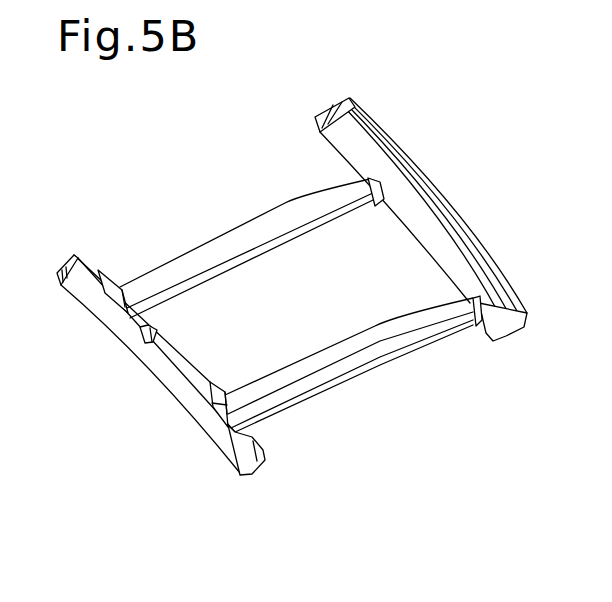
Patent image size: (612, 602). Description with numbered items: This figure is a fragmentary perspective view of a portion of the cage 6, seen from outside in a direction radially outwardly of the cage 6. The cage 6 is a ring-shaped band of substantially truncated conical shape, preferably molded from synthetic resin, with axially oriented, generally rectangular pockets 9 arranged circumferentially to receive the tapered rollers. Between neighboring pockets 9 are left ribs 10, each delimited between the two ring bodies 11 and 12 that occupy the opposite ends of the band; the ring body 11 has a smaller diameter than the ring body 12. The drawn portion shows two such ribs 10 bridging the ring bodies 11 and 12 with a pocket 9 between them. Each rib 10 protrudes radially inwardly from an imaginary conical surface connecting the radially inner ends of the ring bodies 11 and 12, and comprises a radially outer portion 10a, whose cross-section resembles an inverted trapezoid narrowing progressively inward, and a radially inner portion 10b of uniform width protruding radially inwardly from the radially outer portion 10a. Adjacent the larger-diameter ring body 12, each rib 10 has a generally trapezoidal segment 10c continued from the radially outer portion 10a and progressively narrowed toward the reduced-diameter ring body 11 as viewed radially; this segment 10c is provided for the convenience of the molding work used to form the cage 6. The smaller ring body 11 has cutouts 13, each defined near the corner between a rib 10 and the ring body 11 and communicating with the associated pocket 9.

The cage 6 is at (400, 128).
The pocket 9 is at (318, 320).
The rib 10 is at (271, 387).
The radially outer portion 10a is at (276, 218).
The radially inner portion 10b is at (294, 238).
The trapezoidal segment 10c is at (332, 178).
The ring body 11 is at (182, 387).
The ring body 12 is at (420, 225).
The cutout 13 is at (140, 335).